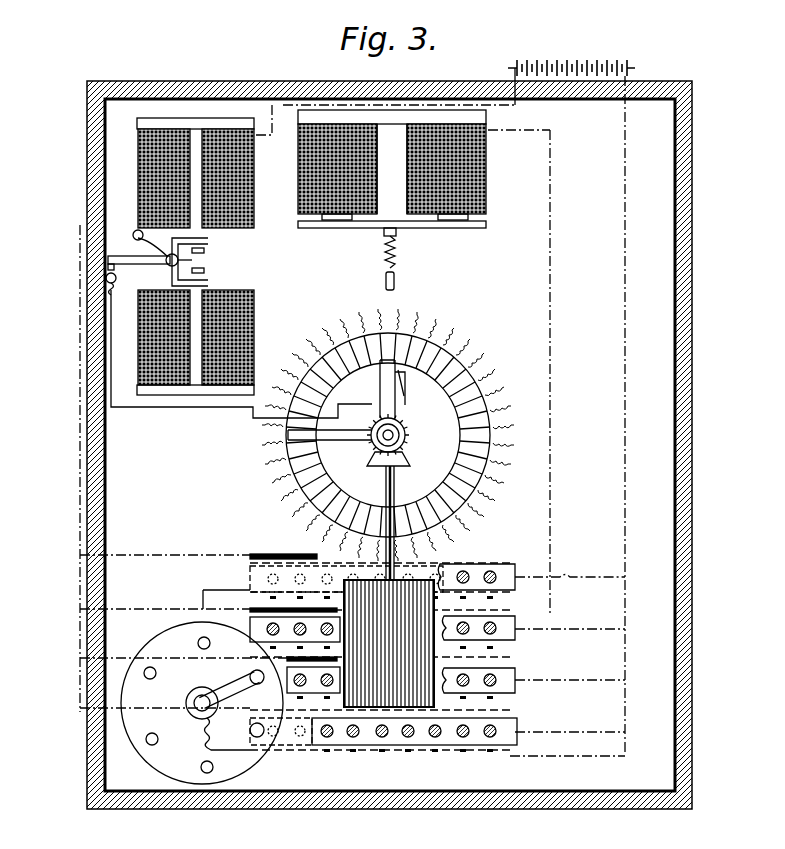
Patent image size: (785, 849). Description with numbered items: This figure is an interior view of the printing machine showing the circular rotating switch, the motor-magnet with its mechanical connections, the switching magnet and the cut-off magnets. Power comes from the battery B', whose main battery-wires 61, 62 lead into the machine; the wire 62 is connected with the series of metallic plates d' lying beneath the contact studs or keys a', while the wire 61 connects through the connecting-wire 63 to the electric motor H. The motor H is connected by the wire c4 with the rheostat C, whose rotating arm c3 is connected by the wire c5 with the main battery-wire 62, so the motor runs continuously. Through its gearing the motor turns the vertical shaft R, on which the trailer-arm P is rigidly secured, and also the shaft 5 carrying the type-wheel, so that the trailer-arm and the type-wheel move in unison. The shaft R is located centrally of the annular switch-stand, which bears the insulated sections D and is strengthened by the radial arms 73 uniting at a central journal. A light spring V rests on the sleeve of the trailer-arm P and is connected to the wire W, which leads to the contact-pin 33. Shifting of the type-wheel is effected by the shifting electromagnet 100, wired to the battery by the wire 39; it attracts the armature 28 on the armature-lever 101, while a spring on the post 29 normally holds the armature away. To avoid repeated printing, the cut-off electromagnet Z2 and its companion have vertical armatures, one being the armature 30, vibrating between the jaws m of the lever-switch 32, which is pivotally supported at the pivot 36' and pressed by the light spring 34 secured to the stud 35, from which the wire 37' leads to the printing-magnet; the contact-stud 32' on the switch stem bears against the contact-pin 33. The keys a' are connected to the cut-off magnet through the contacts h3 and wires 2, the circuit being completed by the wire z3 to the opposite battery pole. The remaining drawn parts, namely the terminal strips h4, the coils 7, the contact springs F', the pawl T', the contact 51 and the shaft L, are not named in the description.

The battery B' is at (571, 380).
The wire z3 is at (291, 104).
The wires 2 is at (60, 520).
The electromagnet Z2 is at (207, 173).
The wire W is at (182, 404).
The shifting electromagnet 100 is at (486, 172).
The wire 39 is at (486, 130).
The main battery-wire 61 is at (552, 438).
The armature-lever 101 is at (390, 226).
The armature 28 is at (467, 228).
The shaft 5 is at (397, 249).
The post 29 is at (384, 281).
The stud 35 is at (134, 231).
The wire 37' is at (85, 231).
The light spring 34 is at (157, 250).
The lever-switch 32 is at (139, 253).
The contact-stud 32' is at (68, 261).
The contact-pin 33 is at (106, 278).
The pivot 36' is at (187, 262).
The jaws m is at (198, 263).
The contact 51 is at (204, 250).
The vertical armature 30 is at (204, 270).
The insulated sections D is at (307, 467).
The wheel coils 7 is at (490, 392).
The wheel contact springs F' is at (495, 513).
The shaft R is at (410, 437).
The trailer-arm P is at (357, 437).
The pawl T' is at (346, 402).
The light spring V is at (407, 389).
The radial arms 73 is at (398, 370).
The shaft L is at (396, 462).
The contacts h3 is at (290, 658).
The terminal strip h4 is at (383, 752).
The metallic plates d' is at (531, 660).
The contact studs a' is at (476, 648).
The main battery-wire 62 is at (625, 575).
The connecting-wire 63 is at (518, 633).
The electric motor H is at (389, 643).
The rheostat C is at (202, 697).
The rotating arm c3 is at (224, 683).
The wire c4 is at (210, 590).
The wire c5 is at (282, 746).